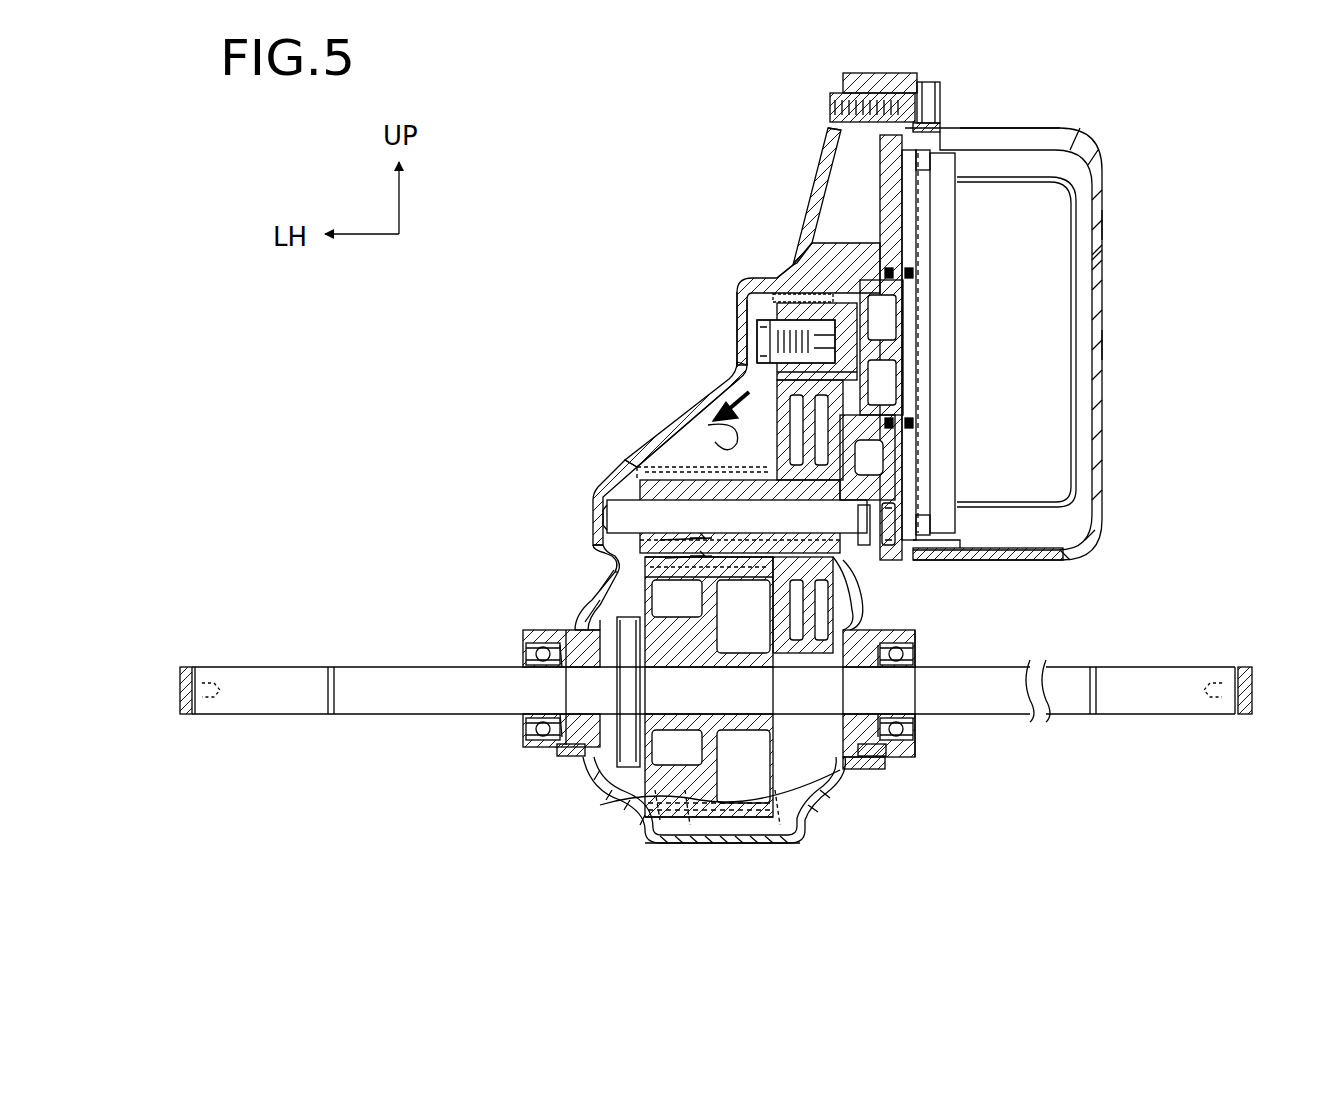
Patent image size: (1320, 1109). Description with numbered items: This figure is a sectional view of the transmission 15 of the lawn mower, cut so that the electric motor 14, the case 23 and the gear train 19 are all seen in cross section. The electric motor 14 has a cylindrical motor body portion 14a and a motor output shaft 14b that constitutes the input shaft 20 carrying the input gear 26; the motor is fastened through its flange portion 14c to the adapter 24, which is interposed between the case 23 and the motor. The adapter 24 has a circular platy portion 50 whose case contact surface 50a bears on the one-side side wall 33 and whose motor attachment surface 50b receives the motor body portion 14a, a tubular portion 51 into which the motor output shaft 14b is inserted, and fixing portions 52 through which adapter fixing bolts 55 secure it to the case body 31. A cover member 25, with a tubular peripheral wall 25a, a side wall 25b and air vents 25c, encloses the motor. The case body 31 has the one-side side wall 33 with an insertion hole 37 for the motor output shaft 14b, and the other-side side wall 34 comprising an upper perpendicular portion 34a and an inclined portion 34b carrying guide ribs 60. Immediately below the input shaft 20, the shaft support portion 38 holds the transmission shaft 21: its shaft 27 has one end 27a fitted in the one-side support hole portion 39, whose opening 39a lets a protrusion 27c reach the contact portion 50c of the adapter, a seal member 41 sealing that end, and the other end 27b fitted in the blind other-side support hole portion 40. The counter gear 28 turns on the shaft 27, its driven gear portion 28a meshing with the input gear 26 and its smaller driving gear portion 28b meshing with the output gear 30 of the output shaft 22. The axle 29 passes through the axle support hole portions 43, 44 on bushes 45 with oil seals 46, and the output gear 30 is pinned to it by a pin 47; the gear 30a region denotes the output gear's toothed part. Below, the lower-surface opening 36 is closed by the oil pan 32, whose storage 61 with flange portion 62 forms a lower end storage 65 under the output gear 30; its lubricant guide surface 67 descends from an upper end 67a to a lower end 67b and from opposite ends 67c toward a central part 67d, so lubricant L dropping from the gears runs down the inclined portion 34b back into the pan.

The electric motor 14 is at (1086, 290).
The motor body portion 14a is at (1050, 330).
The motor output shaft 14b is at (789, 276).
The flange portion 14c is at (1005, 158).
The transmission 15 is at (802, 118).
The gear train 19 is at (600, 560).
The input shaft 20 is at (745, 280).
The transmission shaft 21 is at (665, 462).
The output shaft 22 is at (622, 587).
The case 23 is at (738, 283).
The adapter 24 is at (958, 250).
The cover member 25 is at (1112, 380).
The peripheral wall 25a is at (982, 128).
The side wall 25b is at (1103, 345).
The air vents 25c is at (1100, 223).
The input gear 26 is at (770, 293).
The shaft 27 is at (628, 508).
The one end 27a is at (882, 557).
The other end 27b is at (618, 522).
The protrusion 27c is at (1025, 562).
The counter gear 28 is at (608, 485).
The driven gear portion 28a is at (760, 298).
The driving gear portion 28b is at (640, 478).
The axle 29 is at (268, 667).
The output gear 30 is at (745, 835).
The hub gear portion 30a is at (732, 822).
The case body 31 is at (585, 600).
The oil pan 32 is at (672, 842).
The one-side side wall 33 is at (897, 470).
The other-side side wall 34 is at (737, 322).
The perpendicular portion 34a is at (727, 293).
The inclined portion 34b is at (707, 463).
The lower-surface opening 36 is at (868, 770).
The insertion hole 37 is at (1092, 258).
The shaft support portion 38 is at (640, 530).
The one-side support hole portion 39 is at (876, 603).
The opening 39a is at (1000, 560).
The other-side support hole portion 40 is at (612, 537).
The seal member 41 is at (890, 487).
The axle support hole portion 43 is at (880, 690).
The axle support hole portion 44 is at (545, 690).
The bushes 45 is at (560, 660).
The oil seals 46 is at (542, 740).
The pin 47 is at (625, 755).
The platy portion 50 is at (948, 205).
The case contact surface 50a is at (840, 130).
The motor attachment surface 50b is at (990, 177).
The contact portion 50c is at (927, 527).
The tubular portion 51 is at (903, 433).
The fixing portion 52 is at (965, 120).
The adapter fixing bolt 55 is at (943, 95).
The guide ribs 60 is at (705, 445).
The storage 61 is at (800, 838).
The flange portion 62 is at (888, 788).
The lower end storage 65 is at (762, 822).
The lubricant guide surface 67 is at (830, 790).
The upper end 67a is at (650, 812).
The lower end 67b is at (782, 822).
The opposite ends 67c is at (630, 790).
The central part 67d is at (692, 820).
The lubricant L is at (710, 408).